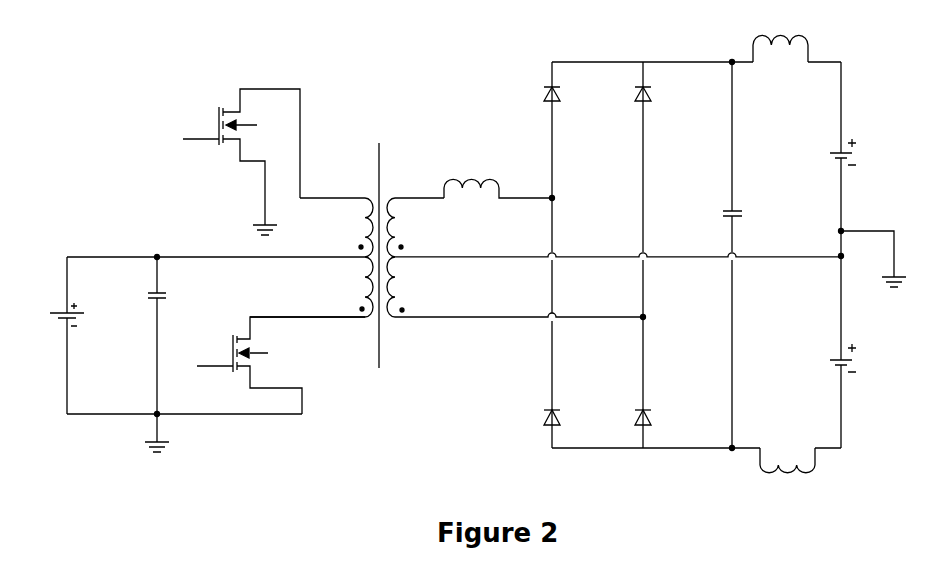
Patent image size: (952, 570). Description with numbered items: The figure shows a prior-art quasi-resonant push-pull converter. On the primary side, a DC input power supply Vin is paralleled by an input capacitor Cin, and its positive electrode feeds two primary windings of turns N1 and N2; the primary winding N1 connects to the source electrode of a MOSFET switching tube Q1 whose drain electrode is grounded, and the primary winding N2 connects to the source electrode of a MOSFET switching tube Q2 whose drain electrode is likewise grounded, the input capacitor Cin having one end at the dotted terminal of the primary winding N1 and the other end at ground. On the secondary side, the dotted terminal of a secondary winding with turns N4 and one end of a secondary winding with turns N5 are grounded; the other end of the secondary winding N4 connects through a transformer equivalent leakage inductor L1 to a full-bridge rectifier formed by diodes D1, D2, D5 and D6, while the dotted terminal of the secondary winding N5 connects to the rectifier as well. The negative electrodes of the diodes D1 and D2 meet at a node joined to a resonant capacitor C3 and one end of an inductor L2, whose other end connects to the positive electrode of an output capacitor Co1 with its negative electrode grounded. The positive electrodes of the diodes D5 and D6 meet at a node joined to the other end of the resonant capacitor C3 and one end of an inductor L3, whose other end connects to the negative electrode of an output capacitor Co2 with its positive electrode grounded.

The DC input power supply Vin is at (48, 335).
The input capacitor Cin is at (176, 335).
The MOSFET switching tube Q1 is at (241, 162).
The MOSFET switching tube Q2 is at (281, 365).
The primary windings of turns N1 is at (336, 227).
The primary windings of turns N2 is at (311, 287).
The secondary windings with turns N4 is at (614, 227).
The secondary windings with turns N5 is at (516, 288).
The transformer equivalent leakage inductor L1 is at (499, 181).
The inductor L2 is at (780, 58).
The inductor L3 is at (787, 451).
The diode D1 is at (535, 255).
The diode D2 is at (658, 255).
The diode D5 is at (540, 419).
The diode D6 is at (658, 419).
The resonant capacitor C3 is at (750, 255).
The output capacitor Co1 is at (868, 159).
The output capacitor Co2 is at (868, 352).